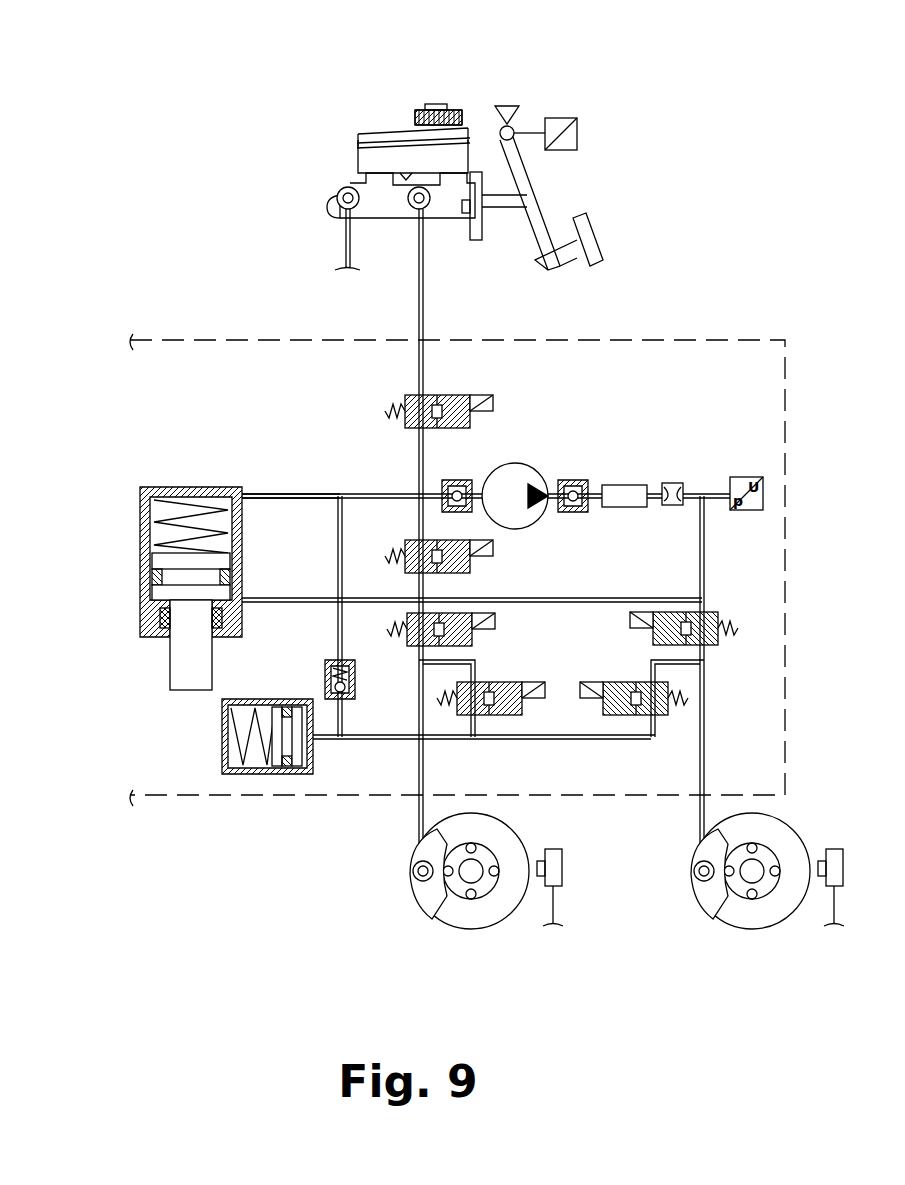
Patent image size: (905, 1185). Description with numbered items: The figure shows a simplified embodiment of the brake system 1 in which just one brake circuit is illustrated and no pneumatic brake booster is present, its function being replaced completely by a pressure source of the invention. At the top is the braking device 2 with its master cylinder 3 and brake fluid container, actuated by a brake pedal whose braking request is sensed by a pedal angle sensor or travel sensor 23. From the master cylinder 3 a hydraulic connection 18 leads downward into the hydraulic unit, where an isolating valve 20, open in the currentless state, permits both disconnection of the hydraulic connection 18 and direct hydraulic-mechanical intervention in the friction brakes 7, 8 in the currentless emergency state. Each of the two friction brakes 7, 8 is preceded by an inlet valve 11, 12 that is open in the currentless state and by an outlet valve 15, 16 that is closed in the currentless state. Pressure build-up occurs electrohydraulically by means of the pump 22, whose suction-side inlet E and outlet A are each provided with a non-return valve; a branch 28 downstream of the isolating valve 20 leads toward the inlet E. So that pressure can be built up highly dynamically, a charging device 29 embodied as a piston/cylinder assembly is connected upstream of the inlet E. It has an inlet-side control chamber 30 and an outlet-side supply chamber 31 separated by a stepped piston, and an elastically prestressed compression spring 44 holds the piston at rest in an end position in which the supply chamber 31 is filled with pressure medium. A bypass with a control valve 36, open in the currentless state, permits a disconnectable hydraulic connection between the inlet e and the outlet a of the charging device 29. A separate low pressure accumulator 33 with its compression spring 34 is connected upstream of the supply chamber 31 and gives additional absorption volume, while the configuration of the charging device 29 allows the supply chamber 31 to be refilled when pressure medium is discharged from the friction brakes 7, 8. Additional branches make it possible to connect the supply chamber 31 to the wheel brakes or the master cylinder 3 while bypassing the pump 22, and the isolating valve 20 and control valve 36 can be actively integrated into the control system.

The brake system 1 is at (750, 152).
The braking device 2 is at (345, 149).
The master cylinder 3 is at (386, 210).
The friction brake 7 is at (430, 890).
The friction brake 8 is at (710, 893).
The inlet valve 11 is at (480, 638).
The inlet valve 12 is at (645, 640).
The outlet valve 15 is at (480, 682).
The outlet valve 16 is at (640, 685).
The hydraulic connection 18 is at (425, 300).
The isolating valve 20 is at (405, 428).
The pump 22 is at (525, 505).
The pedal angle sensor or travel sensor 23 is at (577, 131).
The branch 28 is at (363, 604).
The charging device 29 is at (152, 610).
The control chamber 30 is at (150, 608).
The supply chamber 31 is at (158, 520).
The low pressure accumulator 33 is at (205, 706).
The compression spring 34 is at (267, 718).
The control valve 36 is at (473, 562).
The compression spring 44 is at (165, 538).
The inlet of the hydraulic pump E is at (480, 482).
The outlet of the hydraulic pump A is at (573, 480).
The outlet of the charging device a is at (246, 494).
The inlet of the charging device e is at (246, 602).